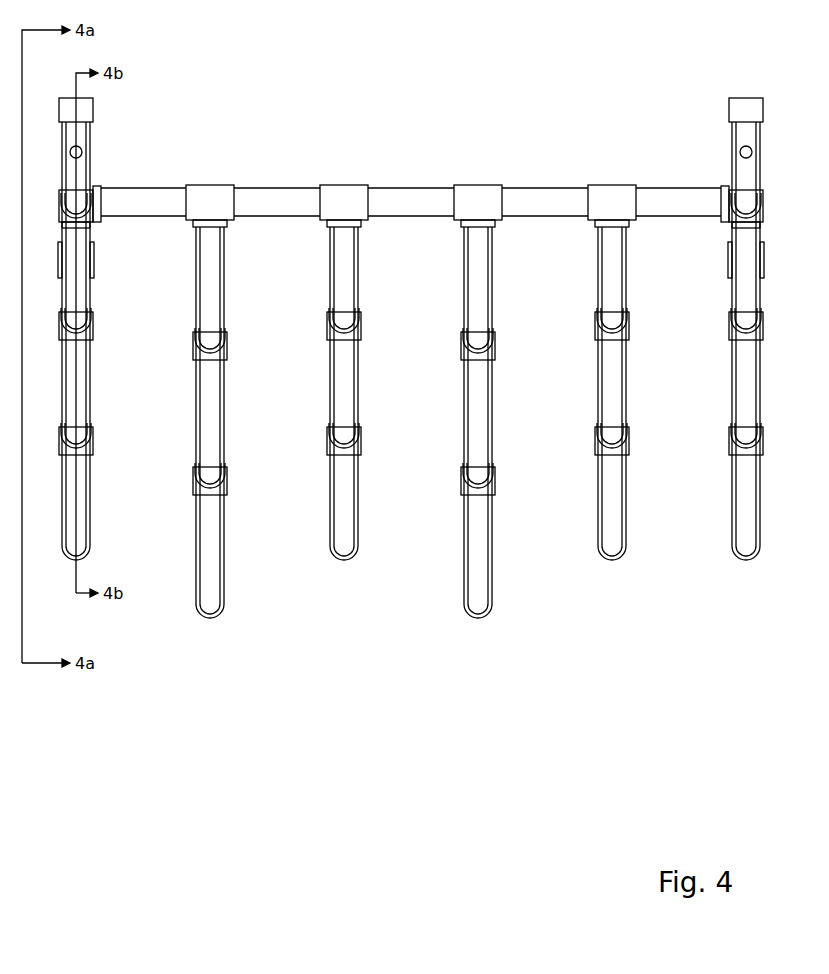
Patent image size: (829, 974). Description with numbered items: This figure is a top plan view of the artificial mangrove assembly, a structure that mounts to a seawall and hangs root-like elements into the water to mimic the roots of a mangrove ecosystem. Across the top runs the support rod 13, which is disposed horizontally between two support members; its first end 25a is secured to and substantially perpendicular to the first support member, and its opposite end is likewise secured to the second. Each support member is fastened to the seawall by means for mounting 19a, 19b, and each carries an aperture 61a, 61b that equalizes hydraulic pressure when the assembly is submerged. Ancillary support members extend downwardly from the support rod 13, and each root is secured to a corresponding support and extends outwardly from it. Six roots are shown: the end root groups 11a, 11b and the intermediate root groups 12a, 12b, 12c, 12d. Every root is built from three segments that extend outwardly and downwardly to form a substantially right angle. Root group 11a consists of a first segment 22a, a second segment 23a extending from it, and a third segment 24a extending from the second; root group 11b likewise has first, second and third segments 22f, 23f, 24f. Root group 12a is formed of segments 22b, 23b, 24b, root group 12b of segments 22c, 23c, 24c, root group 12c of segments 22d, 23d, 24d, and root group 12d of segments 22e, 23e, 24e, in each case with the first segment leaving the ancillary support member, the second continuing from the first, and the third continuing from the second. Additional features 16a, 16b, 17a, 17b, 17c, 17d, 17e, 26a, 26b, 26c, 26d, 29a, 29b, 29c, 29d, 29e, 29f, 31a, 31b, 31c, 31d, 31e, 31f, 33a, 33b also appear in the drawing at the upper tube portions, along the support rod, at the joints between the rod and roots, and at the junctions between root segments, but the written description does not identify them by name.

The root group 11a is at (63, 572).
The root group 11b is at (730, 568).
The root group 12a is at (192, 624).
The root group 12b is at (326, 566).
The root group 12c is at (460, 624).
The root group 12d is at (594, 566).
The support rod 13 is at (385, 198).
The upper tube section 16a is at (62, 172).
The upper tube section 16b is at (760, 174).
The bar segment 17a is at (150, 188).
The bar segment 17b is at (285, 188).
The bar segment 17c is at (418, 188).
The bar segment 17d is at (552, 188).
The bar segment 17e is at (676, 188).
The means for mounting 19a is at (59, 103).
The means for mounting 19b is at (763, 106).
The first segment 22a is at (62, 292).
The first segment 22b is at (196, 282).
The first segment 22c is at (330, 282).
The first segment 22d is at (464, 282).
The first segment 22e is at (598, 282).
The first segment 22f is at (732, 282).
The second segment 23a is at (62, 398).
The second segment 23b is at (196, 416).
The second segment 23c is at (330, 398).
The second segment 23d is at (464, 416).
The second segment 23e is at (598, 398).
The second segment 23f is at (732, 398).
The third segment 24a is at (62, 507).
The third segment 24b is at (196, 545).
The third segment 24c is at (330, 518).
The third segment 24d is at (464, 545).
The third segment 24e is at (598, 518).
The third segment 24f is at (732, 518).
The first end 25a is at (97, 204).
The tee connector 26a is at (210, 185).
The tee connector 26b is at (344, 185).
The tee connector 26c is at (478, 185).
The tee connector 26d is at (612, 185).
The tube coupler 29a is at (59, 333).
The tube coupler 29b is at (193, 350).
The tube coupler 29c is at (327, 333).
The tube coupler 29d is at (461, 350).
The tube coupler 29e is at (595, 333).
The tube coupler 29f is at (729, 333).
The tube coupler 31a is at (59, 451).
The tube coupler 31b is at (193, 486).
The tube coupler 31c is at (327, 451).
The tube coupler 31d is at (461, 486).
The tube coupler 31e is at (595, 451).
The tube coupler 31f is at (729, 451).
The upper coupler 33a is at (58, 248).
The upper coupler 33b is at (764, 248).
The aperture 61a is at (82, 149).
The aperture 61b is at (740, 149).